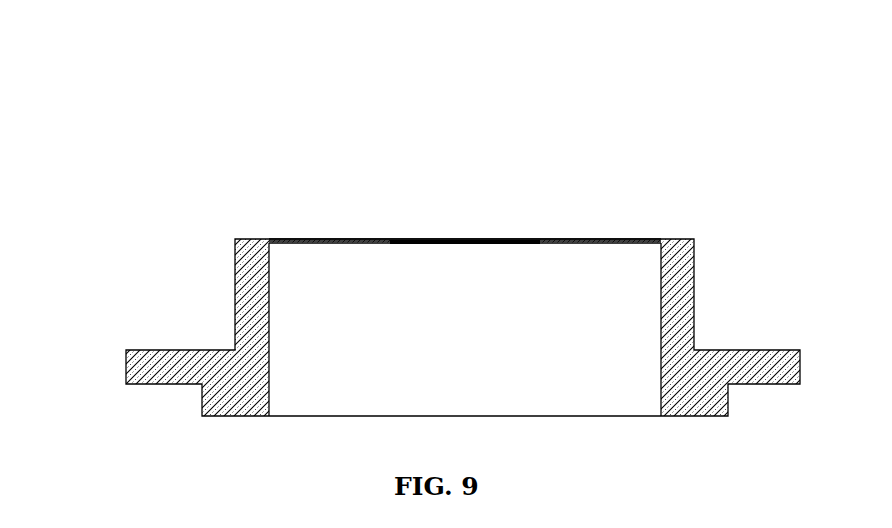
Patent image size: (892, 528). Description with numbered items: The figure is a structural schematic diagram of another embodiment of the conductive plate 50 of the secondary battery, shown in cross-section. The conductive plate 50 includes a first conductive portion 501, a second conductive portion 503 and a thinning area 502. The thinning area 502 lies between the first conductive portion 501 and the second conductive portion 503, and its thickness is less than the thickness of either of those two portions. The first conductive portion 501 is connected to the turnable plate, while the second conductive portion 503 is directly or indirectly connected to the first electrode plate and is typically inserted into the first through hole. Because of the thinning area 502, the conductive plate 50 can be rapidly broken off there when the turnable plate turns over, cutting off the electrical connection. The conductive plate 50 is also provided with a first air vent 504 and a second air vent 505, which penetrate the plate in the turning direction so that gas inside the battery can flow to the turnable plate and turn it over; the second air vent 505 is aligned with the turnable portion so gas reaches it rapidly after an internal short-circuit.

The conductive plate 50 is at (419, 222).
The first conductive portion 501 is at (352, 240).
The thinning area 502 is at (287, 240).
The second conductive portion 503 is at (248, 317).
The first air vent 504 is at (495, 237).
The second air vent 505 is at (598, 238).